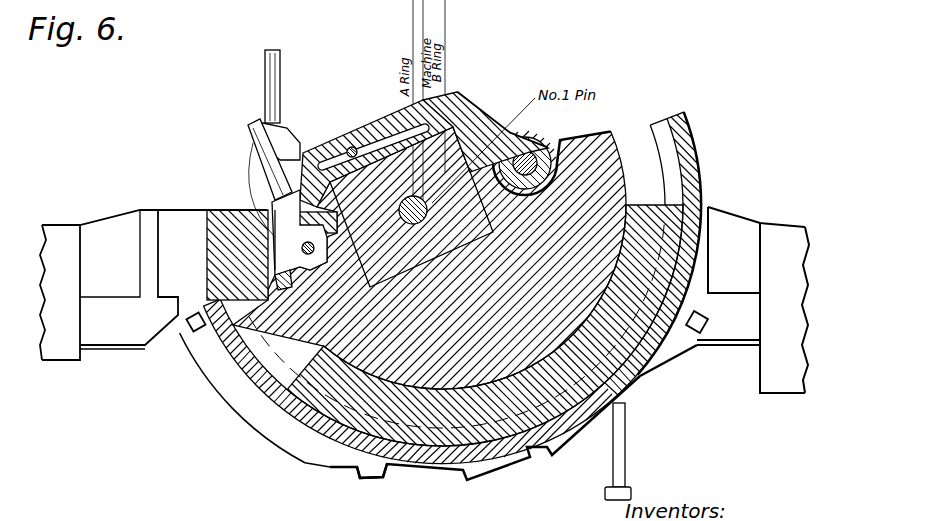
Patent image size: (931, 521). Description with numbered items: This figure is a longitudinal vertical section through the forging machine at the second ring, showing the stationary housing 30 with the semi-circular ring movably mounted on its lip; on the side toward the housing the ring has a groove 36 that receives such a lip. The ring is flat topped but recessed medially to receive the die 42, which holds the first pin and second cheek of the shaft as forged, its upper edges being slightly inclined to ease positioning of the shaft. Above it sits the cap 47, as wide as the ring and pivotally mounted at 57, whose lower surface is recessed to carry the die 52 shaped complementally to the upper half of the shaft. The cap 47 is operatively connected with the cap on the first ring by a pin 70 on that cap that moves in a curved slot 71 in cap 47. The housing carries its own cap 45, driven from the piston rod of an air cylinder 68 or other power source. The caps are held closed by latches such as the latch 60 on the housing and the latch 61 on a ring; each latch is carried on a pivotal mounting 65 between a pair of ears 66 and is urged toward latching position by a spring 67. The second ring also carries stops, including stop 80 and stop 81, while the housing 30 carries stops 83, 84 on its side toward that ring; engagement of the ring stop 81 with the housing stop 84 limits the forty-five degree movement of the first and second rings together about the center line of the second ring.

The stationary housing 30 is at (222, 387).
The groove 36 is at (642, 165).
The die 42 is at (545, 148).
The cap 45 is at (340, 132).
The cap 47 is at (455, 150).
The die 52 is at (478, 130).
The pivotal mounting 57 is at (528, 157).
The latch 60 is at (275, 138).
The latch 61 is at (283, 207).
The pivotal mounting 65 is at (300, 252).
The ears 66 is at (285, 242).
The spring 67 is at (273, 283).
The air cylinder 68 is at (632, 0).
The pin 70 is at (352, 147).
The curved slot 71 is at (325, 153).
The stop 80 is at (672, 352).
The stop 81 is at (373, 472).
The stop 83 is at (704, 322).
The stop 84 is at (190, 324).